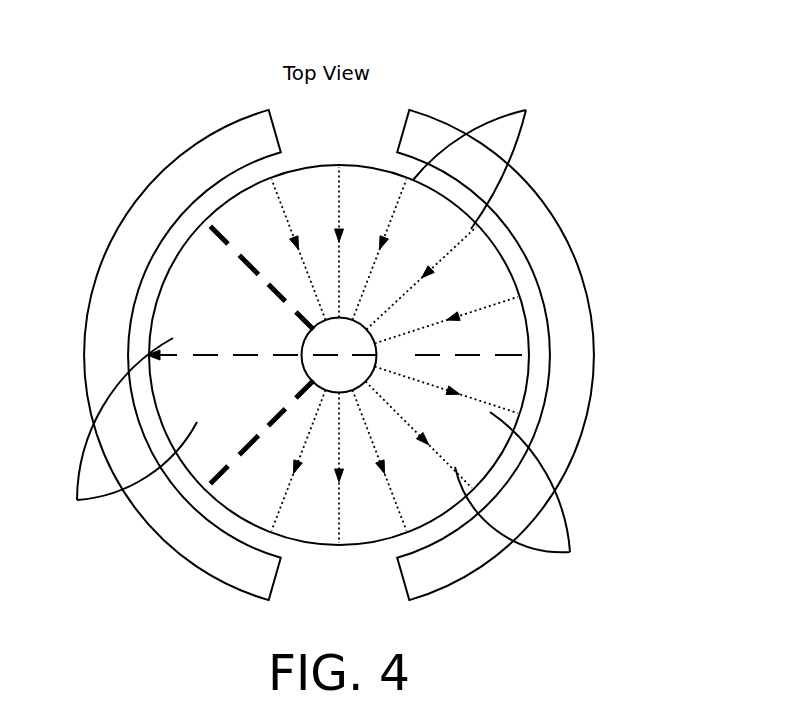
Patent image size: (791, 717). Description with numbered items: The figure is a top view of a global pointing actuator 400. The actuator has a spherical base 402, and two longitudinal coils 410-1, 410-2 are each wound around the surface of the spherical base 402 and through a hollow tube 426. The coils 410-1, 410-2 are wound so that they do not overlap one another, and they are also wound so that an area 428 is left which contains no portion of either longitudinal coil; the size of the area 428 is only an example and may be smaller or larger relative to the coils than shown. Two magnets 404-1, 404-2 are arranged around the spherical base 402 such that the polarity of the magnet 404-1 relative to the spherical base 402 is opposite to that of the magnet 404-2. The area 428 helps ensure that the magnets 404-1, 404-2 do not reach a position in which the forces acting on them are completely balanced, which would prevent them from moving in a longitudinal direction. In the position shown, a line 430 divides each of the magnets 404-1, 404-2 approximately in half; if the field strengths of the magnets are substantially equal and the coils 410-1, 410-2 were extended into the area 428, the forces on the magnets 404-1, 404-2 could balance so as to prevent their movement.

The global pointing actuator 400 is at (233, 82).
The spherical base 402 is at (370, 158).
The magnet 404-1 is at (125, 214).
The magnet 404-2 is at (573, 268).
The longitudinal coil 410-1 is at (493, 154).
The longitudinal coil 410-2 is at (542, 498).
The hollow tube 426 is at (300, 350).
The area 428 is at (120, 436).
The line 430 is at (508, 358).